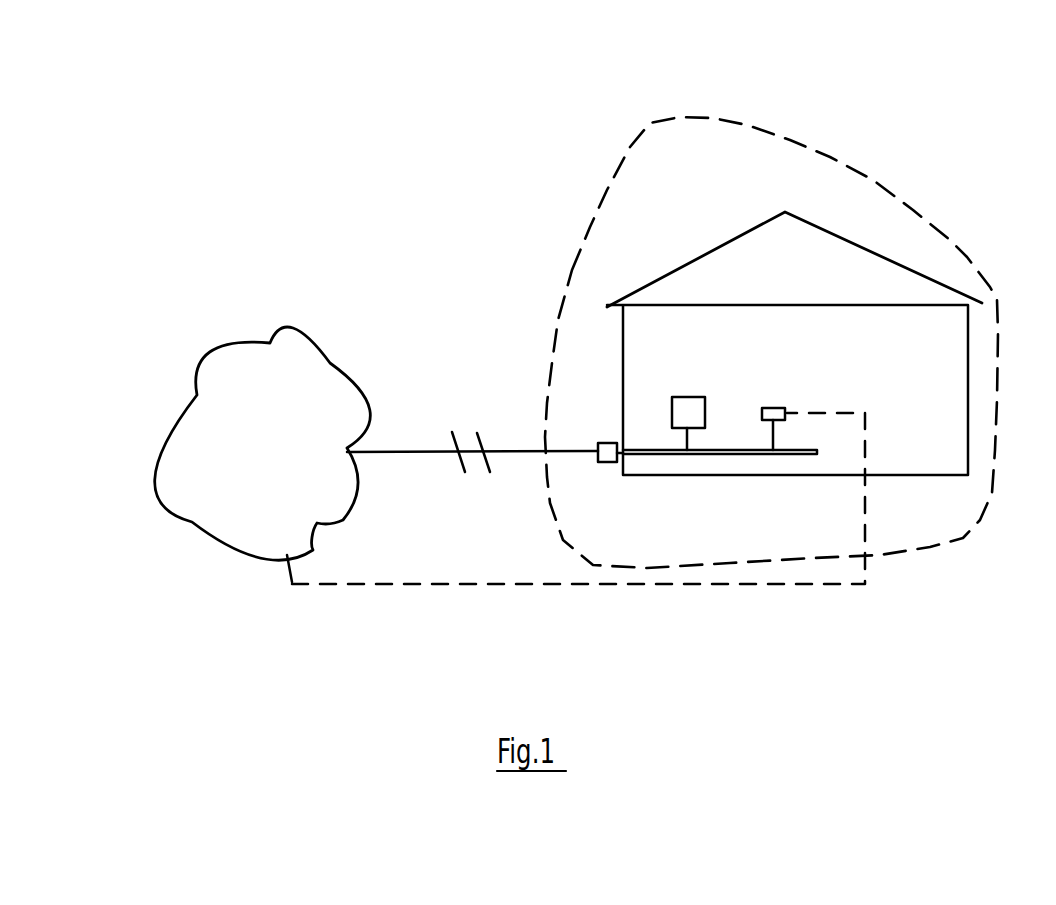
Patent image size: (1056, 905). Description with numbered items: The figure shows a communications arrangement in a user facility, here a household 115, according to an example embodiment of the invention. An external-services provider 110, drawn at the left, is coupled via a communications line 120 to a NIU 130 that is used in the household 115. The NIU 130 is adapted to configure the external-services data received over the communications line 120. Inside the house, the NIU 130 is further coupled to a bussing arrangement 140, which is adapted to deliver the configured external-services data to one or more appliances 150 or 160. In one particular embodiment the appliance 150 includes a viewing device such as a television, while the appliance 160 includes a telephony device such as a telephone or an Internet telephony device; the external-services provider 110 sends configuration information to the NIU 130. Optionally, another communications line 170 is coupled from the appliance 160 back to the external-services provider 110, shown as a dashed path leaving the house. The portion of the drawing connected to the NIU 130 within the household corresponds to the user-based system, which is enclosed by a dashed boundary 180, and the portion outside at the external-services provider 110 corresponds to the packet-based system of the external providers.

The external-services provider 110 is at (273, 263).
The household 115 is at (693, 250).
The communications line 120 is at (423, 450).
The NIU 130 is at (602, 466).
The bussing arrangement 140 is at (737, 455).
The appliance 150 is at (693, 383).
The appliance 160 is at (777, 407).
The communications line 170 is at (805, 587).
The home environment boundary 180 is at (808, 145).